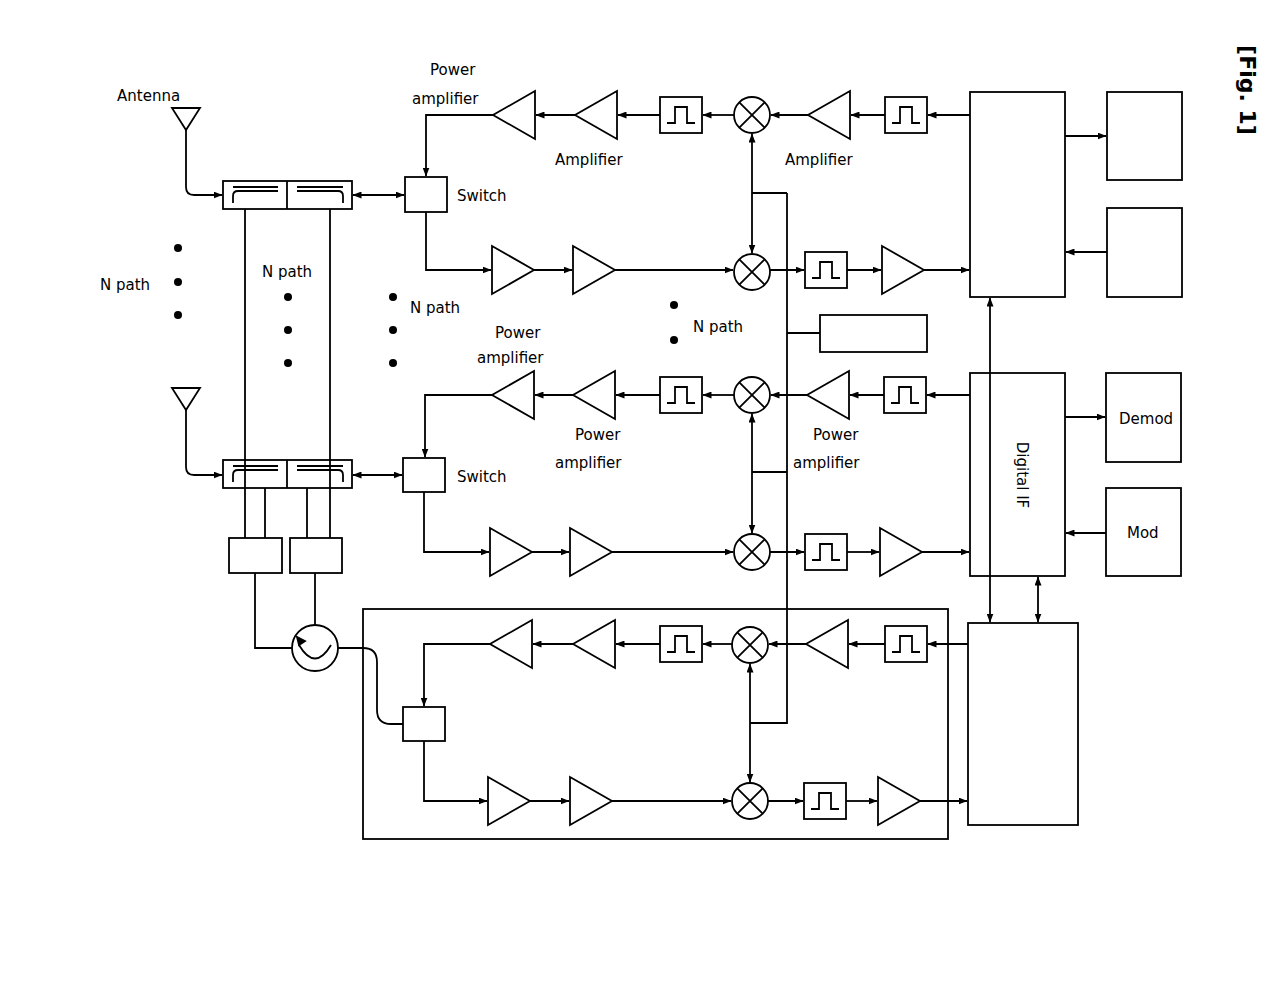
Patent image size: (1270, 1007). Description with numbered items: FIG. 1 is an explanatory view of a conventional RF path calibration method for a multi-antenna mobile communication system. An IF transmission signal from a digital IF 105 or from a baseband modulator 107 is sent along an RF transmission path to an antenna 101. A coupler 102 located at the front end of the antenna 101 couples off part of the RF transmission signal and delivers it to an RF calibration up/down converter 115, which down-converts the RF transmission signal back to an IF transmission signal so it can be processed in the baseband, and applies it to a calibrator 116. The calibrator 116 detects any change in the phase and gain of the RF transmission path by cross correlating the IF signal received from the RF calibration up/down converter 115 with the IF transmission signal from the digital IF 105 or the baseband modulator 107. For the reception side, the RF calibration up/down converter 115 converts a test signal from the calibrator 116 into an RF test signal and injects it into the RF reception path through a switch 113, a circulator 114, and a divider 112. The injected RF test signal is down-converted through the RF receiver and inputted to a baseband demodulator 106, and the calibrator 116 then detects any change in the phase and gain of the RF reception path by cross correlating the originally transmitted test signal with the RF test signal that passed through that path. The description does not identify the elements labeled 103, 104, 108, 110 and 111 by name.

The antenna 101 is at (196, 108).
The coupler 102 is at (328, 181).
The switch 103 is at (437, 177).
The power amplifier 104 is at (522, 91).
The digital IF 105 is at (1012, 92).
The baseband demodulator 106 is at (1135, 92).
The baseband modulator 107 is at (1135, 297).
The amplifier 108 is at (592, 258).
The mixer 110 is at (745, 254).
The PLL 111 is at (907, 315).
The divider 112 is at (229, 555).
The switch 113 is at (342, 555).
The circulator 114 is at (301, 668).
The RF calibration up/down converter 115 is at (363, 747).
The calibrator 116 is at (1012, 825).